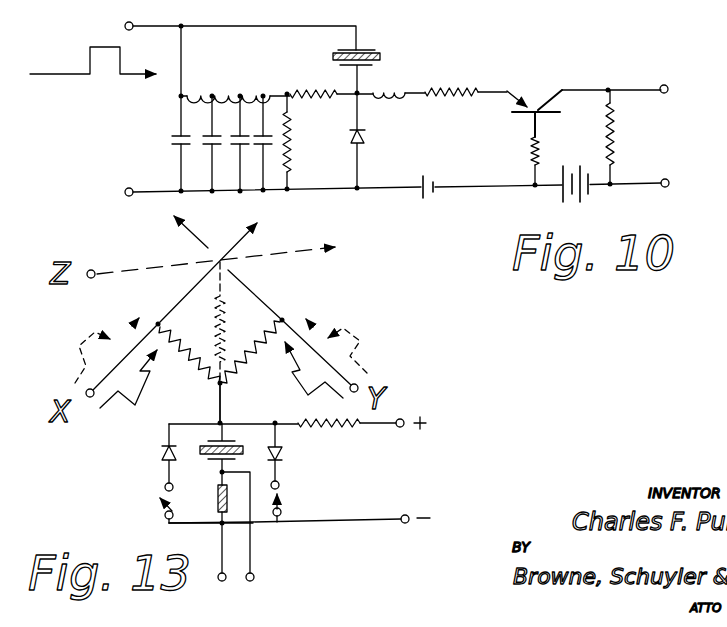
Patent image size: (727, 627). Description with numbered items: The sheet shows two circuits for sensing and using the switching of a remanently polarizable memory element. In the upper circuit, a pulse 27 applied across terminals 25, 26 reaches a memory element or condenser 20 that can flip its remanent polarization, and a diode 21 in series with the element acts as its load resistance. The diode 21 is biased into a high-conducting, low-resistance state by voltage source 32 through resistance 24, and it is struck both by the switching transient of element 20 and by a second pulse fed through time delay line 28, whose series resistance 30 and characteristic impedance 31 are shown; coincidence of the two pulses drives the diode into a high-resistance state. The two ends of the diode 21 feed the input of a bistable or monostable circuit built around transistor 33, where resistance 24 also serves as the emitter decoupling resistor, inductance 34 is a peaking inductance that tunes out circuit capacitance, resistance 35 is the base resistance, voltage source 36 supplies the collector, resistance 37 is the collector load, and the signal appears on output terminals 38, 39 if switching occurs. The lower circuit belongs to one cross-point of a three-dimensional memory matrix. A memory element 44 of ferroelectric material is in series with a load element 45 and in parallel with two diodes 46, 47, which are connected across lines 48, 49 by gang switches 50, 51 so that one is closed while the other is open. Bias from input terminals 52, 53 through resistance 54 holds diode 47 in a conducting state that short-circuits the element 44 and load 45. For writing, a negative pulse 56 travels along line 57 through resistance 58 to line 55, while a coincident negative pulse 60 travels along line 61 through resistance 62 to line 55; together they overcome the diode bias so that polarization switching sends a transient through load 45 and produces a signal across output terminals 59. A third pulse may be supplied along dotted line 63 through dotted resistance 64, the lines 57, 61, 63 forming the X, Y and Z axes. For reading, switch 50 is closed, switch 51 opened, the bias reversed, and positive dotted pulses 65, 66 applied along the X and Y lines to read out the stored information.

In FIG. 10, the memory element or condenser 20 is at (376, 52).
In FIG. 10, the diode 21 is at (370, 138).
In FIG. 10, the resistance 24 is at (452, 85).
In FIG. 10, the terminal 25 is at (124, 26).
In FIG. 10, the terminal 26 is at (124, 192).
In FIG. 10, the pulse 27 is at (108, 64).
In FIG. 10, the time delay line 28 is at (222, 130).
In FIG. 10, the resistance 30 is at (315, 99).
In FIG. 10, the characteristic impedance 31 is at (291, 142).
In FIG. 10, the voltage source 32 is at (426, 199).
In FIG. 10, the transistor 33 is at (538, 100).
In FIG. 10, the inductance 34 is at (401, 86).
In FIG. 10, the resistance 35 is at (542, 143).
In FIG. 10, the voltage source 36 is at (566, 200).
In FIG. 10, the resistance 37 is at (614, 123).
In FIG. 10, the terminal 38 is at (668, 91).
In FIG. 10, the terminal 39 is at (669, 180).
In FIG. 13, the memory element 44 is at (239, 444).
In FIG. 13, the load element 45 is at (215, 502).
In FIG. 13, the diode 46 is at (164, 456).
In FIG. 13, the diode 47 is at (288, 453).
In FIG. 13, the line 48 is at (186, 424).
In FIG. 13, the line 49 is at (207, 526).
In FIG. 13, the switch 50 is at (160, 513).
In FIG. 13, the switch 51 is at (288, 500).
In FIG. 13, the input terminal 52 is at (407, 416).
In FIG. 13, the input terminal 53 is at (411, 525).
In FIG. 13, the resistance 54 is at (344, 430).
In FIG. 13, the line 55 is at (224, 398).
In FIG. 13, the negative electrical pulse 56 is at (134, 400).
In FIG. 13, the line 57 is at (125, 357).
In FIG. 13, the resistance 58 is at (189, 365).
In FIG. 13, the output terminals 59 is at (229, 588).
In FIG. 13, the negative pulse 60 is at (306, 388).
In FIG. 13, the line 61 is at (326, 372).
In FIG. 13, the resistance 62 is at (258, 353).
In FIG. 13, the dotted line 63 is at (146, 267).
In FIG. 13, the dotted resistance 64 is at (225, 315).
In FIG. 13, the dotted pulse 65 is at (86, 333).
In FIG. 13, the dotted pulse 66 is at (362, 333).